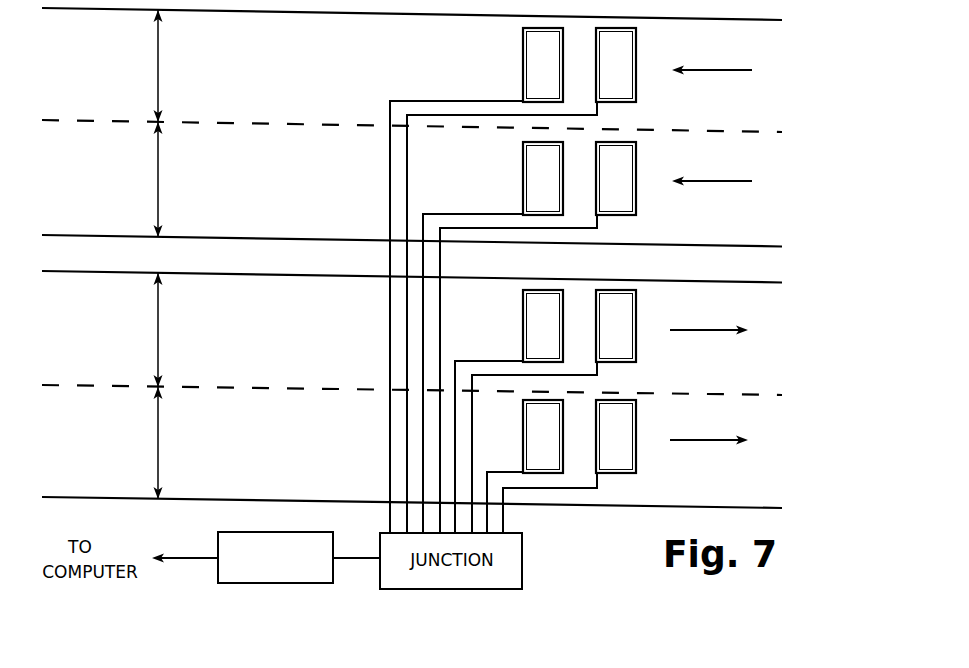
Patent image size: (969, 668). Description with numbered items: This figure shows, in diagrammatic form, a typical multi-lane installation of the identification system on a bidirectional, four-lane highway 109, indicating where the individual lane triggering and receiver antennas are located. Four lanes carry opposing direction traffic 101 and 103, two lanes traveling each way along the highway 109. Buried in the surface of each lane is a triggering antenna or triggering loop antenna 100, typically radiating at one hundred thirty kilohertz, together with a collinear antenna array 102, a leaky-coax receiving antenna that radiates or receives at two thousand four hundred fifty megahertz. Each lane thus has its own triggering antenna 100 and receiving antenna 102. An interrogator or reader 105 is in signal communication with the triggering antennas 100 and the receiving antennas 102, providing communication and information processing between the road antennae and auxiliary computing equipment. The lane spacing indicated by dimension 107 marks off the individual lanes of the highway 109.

The triggering antenna 100 is at (637, 50).
The opposing direction traffic 101 is at (708, 71).
The collinear antenna array 102 is at (522, 56).
The opposing direction traffic 103 is at (708, 331).
The reader 105 is at (290, 585).
The lane width 107 is at (158, 62).
The highway 109 is at (763, 250).